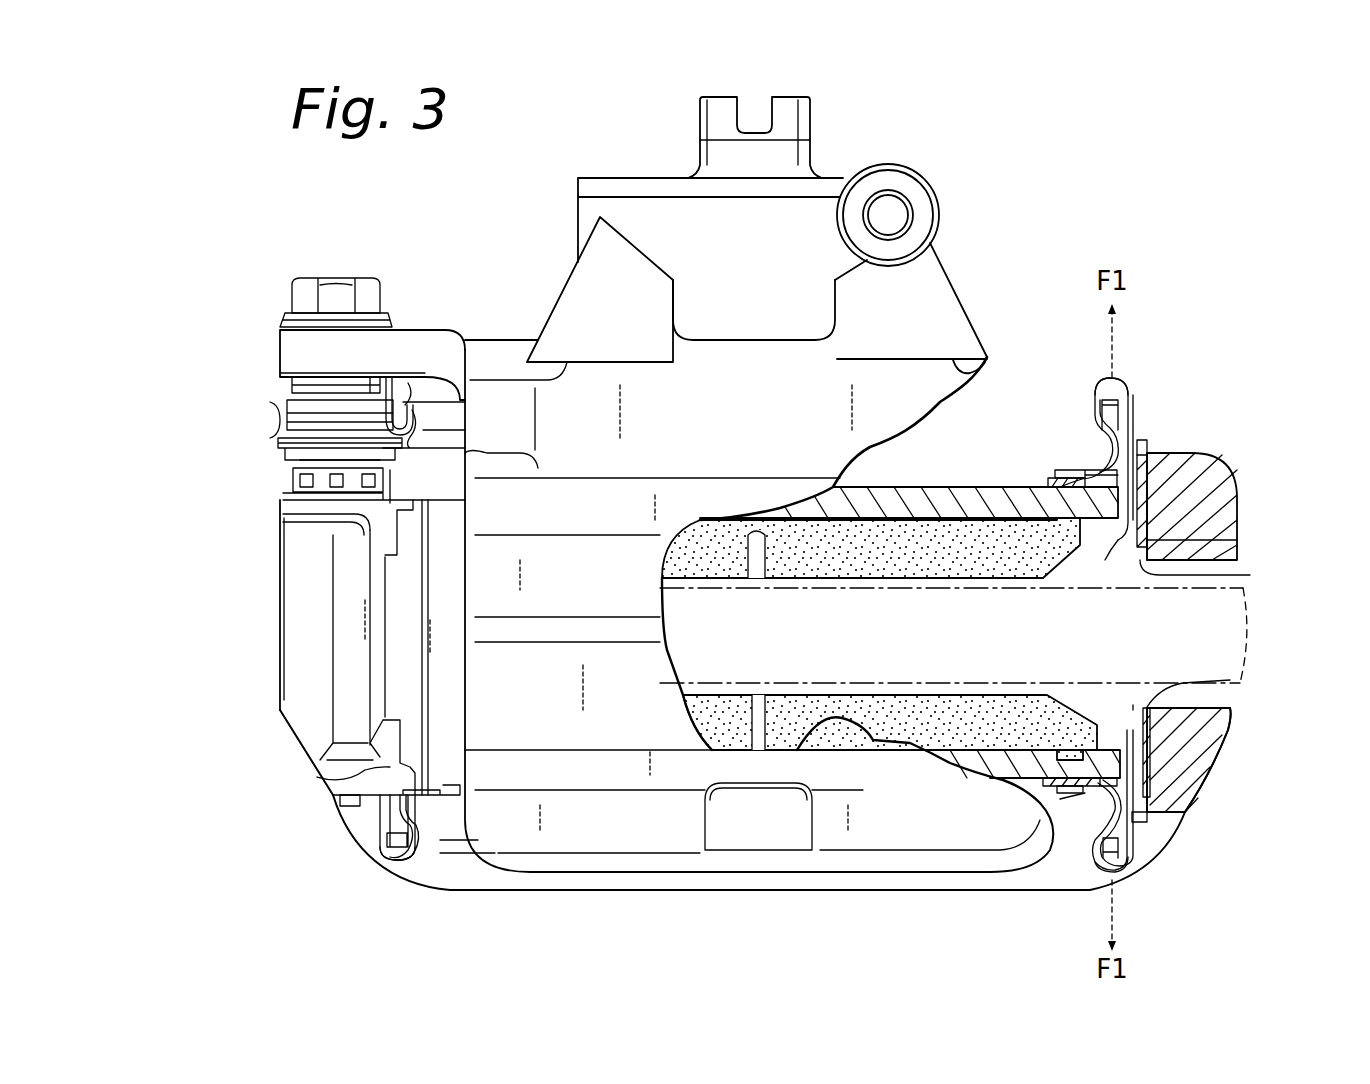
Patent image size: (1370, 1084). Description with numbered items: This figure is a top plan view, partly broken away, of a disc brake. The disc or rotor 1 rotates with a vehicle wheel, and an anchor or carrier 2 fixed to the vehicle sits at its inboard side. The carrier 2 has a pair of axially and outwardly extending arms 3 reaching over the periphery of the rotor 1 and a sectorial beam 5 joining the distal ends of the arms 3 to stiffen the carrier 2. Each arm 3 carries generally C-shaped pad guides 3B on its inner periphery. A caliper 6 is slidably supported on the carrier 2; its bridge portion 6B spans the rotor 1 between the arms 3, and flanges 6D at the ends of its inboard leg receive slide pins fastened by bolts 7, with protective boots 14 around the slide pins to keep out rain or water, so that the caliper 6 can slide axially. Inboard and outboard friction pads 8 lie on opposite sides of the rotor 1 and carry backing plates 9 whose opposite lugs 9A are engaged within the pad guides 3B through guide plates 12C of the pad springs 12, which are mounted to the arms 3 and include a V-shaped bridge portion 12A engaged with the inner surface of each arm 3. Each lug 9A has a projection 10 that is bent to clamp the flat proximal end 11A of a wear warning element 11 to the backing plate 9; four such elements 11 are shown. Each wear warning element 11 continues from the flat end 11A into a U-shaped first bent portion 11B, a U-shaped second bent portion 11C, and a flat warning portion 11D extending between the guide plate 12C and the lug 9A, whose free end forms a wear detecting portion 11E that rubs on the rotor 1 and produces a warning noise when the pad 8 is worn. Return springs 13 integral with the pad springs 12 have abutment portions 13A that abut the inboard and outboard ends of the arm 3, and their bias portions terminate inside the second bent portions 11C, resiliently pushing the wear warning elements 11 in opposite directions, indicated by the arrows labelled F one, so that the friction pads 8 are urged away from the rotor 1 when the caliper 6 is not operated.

The disc or rotor 1 is at (1243, 620).
The anchor or carrier 2 is at (277, 492).
The arms 3 is at (290, 552).
The pad guides 3B is at (1250, 576).
The sectorial beam 5 is at (765, 875).
The caliper 6 is at (570, 210).
The bridge portion 6B is at (487, 670).
The flanges 6D is at (300, 337).
The bolts 7 is at (332, 290).
The friction pads 8 is at (925, 550).
The backing plates 9 is at (975, 490).
The lugs 9A is at (1162, 480).
The projections 10 is at (1060, 470).
The wear warning elements 11 is at (418, 403).
The flat proximal end 11A is at (1050, 478).
The first bent portion 11B is at (1083, 443).
The second bent portion 11C is at (1112, 385).
The warning portion 11D is at (1152, 455).
The wear detecting portion 11E is at (1160, 540).
The pad springs 12 is at (383, 730).
The bridge portion 12A is at (395, 620).
The guide plates 12C is at (1130, 545).
The return springs 13 is at (395, 397).
The abutment portions 13A is at (355, 808).
The protective boots 14 is at (300, 415).